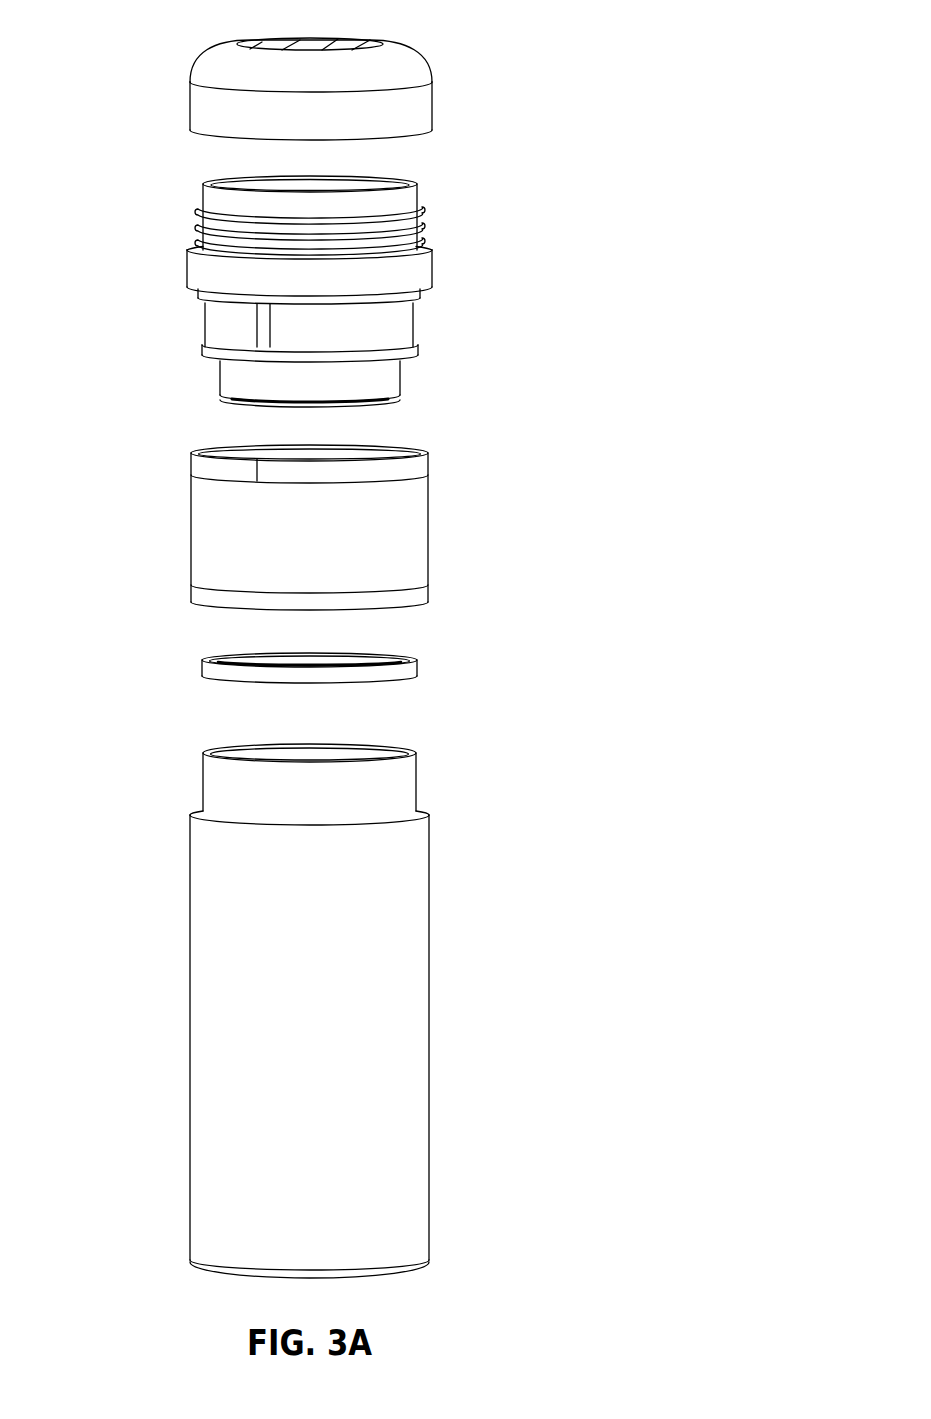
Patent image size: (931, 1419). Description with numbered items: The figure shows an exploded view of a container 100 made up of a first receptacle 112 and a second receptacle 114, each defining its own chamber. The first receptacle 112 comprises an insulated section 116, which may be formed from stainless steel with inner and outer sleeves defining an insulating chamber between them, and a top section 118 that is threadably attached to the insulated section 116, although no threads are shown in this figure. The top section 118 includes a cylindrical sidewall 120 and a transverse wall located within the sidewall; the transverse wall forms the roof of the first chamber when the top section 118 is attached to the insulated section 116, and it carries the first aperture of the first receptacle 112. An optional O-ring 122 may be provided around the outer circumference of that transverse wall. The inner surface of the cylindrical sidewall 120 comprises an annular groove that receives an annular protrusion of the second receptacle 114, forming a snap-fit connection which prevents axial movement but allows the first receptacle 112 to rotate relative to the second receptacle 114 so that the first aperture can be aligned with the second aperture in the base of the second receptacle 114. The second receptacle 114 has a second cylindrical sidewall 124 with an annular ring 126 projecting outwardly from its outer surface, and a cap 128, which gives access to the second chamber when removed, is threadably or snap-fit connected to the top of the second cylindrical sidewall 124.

The container 100 is at (532, 251).
The first receptacle 112 is at (534, 538).
The second receptacle 114 is at (205, 317).
The insulated section 116 is at (420, 937).
The top section 118 is at (191, 544).
The cylindrical sidewall 120 is at (430, 525).
The O-ring 122 is at (413, 667).
The second cylindrical sidewall 124 is at (417, 327).
The annular ring 126 is at (422, 270).
The cap 128 is at (413, 63).